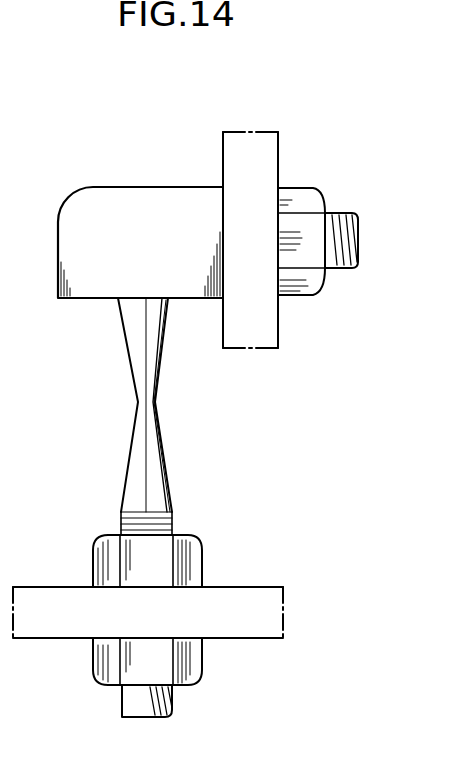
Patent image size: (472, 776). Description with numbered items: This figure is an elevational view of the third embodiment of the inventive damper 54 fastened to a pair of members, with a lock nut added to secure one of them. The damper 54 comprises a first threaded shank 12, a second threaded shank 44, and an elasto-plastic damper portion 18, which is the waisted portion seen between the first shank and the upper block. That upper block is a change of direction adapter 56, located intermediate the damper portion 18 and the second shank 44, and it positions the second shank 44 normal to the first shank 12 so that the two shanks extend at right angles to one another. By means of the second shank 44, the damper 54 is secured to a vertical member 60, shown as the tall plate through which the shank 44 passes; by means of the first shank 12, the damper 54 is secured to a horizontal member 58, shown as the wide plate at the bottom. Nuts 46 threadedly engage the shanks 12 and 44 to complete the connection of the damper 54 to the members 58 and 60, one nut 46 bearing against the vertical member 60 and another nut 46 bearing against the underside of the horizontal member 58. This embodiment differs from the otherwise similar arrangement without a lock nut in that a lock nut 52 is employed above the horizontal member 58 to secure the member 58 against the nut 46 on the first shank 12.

The first threaded shank 12 is at (172, 704).
The elasto-plastic damper portion 18 is at (137, 427).
The second threaded shank 44 is at (341, 212).
The nuts 46 is at (306, 300).
The lock nut 52 is at (197, 563).
The third embodiment damper 54 is at (114, 349).
The change of direction adapter 56 is at (93, 207).
The horizontal member 58 is at (65, 628).
The vertical member 60 is at (268, 160).